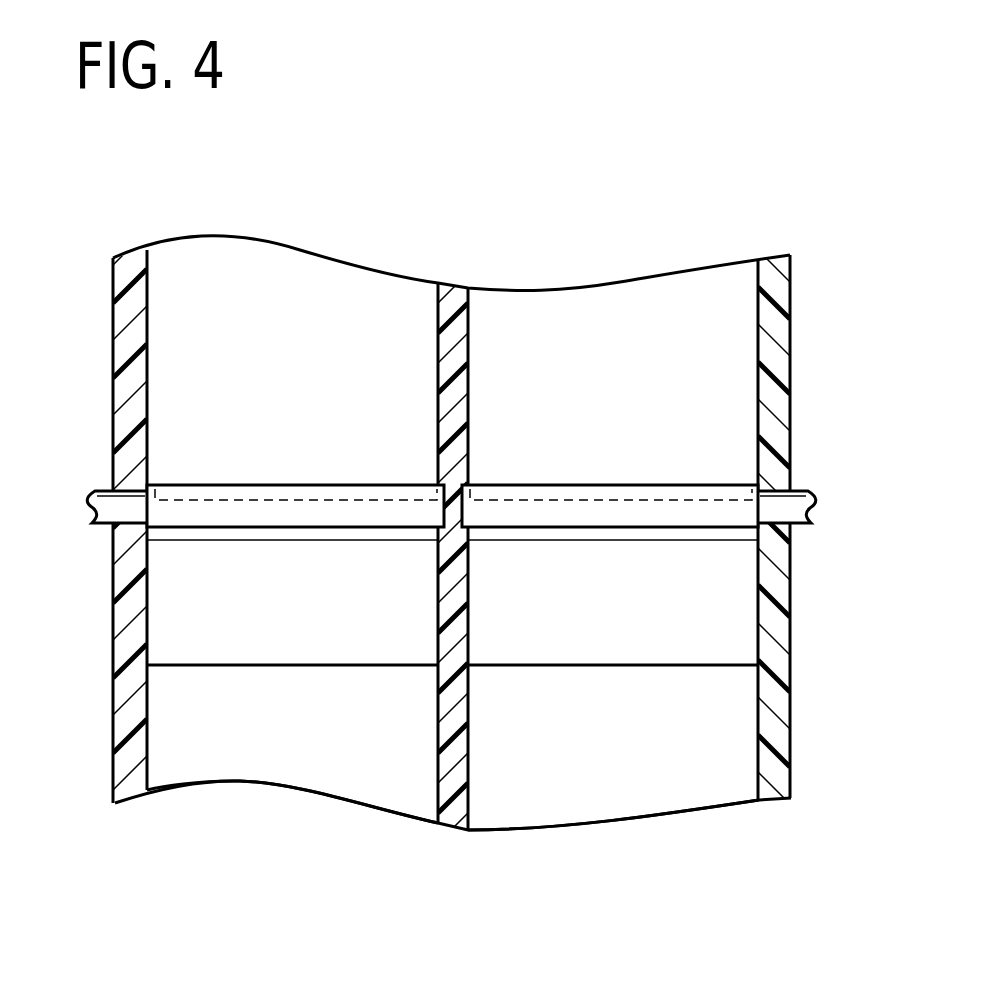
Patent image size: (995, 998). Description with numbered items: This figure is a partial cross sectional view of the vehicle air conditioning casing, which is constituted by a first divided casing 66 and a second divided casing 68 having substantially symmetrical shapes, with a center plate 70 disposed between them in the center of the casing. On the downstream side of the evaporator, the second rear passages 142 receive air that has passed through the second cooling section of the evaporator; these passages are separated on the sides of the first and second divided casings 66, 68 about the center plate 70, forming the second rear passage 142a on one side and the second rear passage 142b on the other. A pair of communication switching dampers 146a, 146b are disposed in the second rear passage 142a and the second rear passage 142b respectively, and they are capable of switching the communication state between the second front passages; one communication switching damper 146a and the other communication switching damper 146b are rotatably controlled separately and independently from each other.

The first divided casing 66 is at (778, 338).
The second divided casing 68 is at (128, 318).
The center plate 70 is at (448, 342).
The second rear passages 142 is at (458, 858).
The second rear passage 142a is at (668, 795).
The second rear passage 142b is at (300, 757).
The communication switching damper 146a is at (718, 612).
The communication switching damper 146b is at (180, 612).